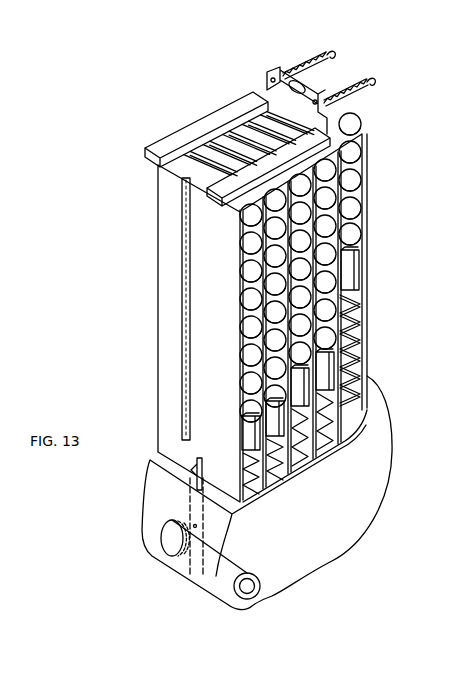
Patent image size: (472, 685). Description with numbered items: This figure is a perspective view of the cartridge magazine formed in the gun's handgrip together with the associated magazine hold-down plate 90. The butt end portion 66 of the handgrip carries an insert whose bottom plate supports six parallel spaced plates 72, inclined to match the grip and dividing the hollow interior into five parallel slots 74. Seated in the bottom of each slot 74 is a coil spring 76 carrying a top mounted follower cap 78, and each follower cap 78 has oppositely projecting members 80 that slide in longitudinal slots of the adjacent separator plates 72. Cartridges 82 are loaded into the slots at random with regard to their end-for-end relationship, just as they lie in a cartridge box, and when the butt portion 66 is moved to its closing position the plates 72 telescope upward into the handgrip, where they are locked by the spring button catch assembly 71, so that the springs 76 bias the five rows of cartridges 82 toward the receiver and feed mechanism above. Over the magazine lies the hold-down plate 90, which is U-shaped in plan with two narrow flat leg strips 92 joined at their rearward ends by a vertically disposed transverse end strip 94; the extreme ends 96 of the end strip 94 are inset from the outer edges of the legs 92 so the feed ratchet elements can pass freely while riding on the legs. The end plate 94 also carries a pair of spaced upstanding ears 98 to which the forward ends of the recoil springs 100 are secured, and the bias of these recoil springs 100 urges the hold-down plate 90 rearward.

The butt end portion 66 is at (377, 457).
The spring button catch assembly 71 is at (197, 470).
The plates 72 is at (168, 297).
The slots 74 is at (353, 322).
The coil spring 76 is at (362, 363).
The follower cap 78 is at (350, 270).
The oppositely projecting members 80 is at (178, 410).
The cartridges 82 is at (348, 196).
The magazine hold-down plate 90 is at (237, 115).
The leg strips 92 is at (217, 120).
The transverse end strip 94 is at (268, 104).
The extreme ends 96 is at (271, 76).
The upstanding ears 98 is at (274, 70).
The recoil springs 100 is at (356, 88).